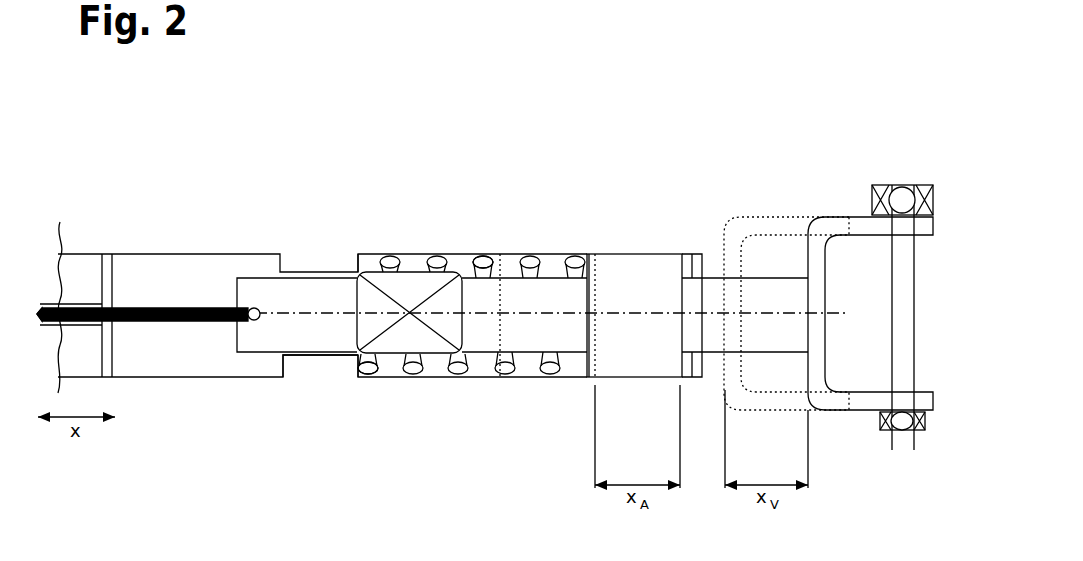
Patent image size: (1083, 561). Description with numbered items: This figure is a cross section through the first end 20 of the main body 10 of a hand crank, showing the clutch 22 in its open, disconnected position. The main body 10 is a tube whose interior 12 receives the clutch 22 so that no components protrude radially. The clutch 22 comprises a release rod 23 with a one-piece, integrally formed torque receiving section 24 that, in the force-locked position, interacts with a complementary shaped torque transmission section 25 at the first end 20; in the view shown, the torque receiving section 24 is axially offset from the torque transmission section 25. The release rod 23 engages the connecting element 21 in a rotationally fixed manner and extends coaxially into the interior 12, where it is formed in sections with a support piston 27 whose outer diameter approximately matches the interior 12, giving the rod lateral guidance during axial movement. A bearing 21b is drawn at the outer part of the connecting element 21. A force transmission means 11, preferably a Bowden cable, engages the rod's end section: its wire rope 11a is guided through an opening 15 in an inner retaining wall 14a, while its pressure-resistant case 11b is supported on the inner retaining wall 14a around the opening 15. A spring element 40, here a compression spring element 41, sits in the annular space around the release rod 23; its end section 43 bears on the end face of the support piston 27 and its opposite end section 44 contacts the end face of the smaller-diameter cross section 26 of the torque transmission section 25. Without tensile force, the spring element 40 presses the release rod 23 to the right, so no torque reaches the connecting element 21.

The main body 10 is at (203, 256).
The force transmission means 11 is at (160, 308).
The wire rope 11a is at (30, 312).
The pressure-resistant case 11b is at (80, 304).
The interior 12 is at (247, 268).
The inner retaining wall 14a is at (113, 330).
The opening 15 is at (152, 324).
The first end 20 is at (525, 215).
The connecting element 21 is at (817, 222).
The bearing 21b is at (907, 185).
The clutch 22 is at (313, 393).
The release rod 23 is at (480, 354).
The torque receiving section 24 is at (430, 354).
The torque transmission section 25 is at (338, 268).
The smaller-diameter cross section 26 is at (283, 357).
The support piston 27 is at (650, 294).
The spring element 40 is at (543, 256).
The compression spring element 41 is at (483, 262).
The end section 43 is at (578, 256).
The opposite end section 44 is at (368, 376).